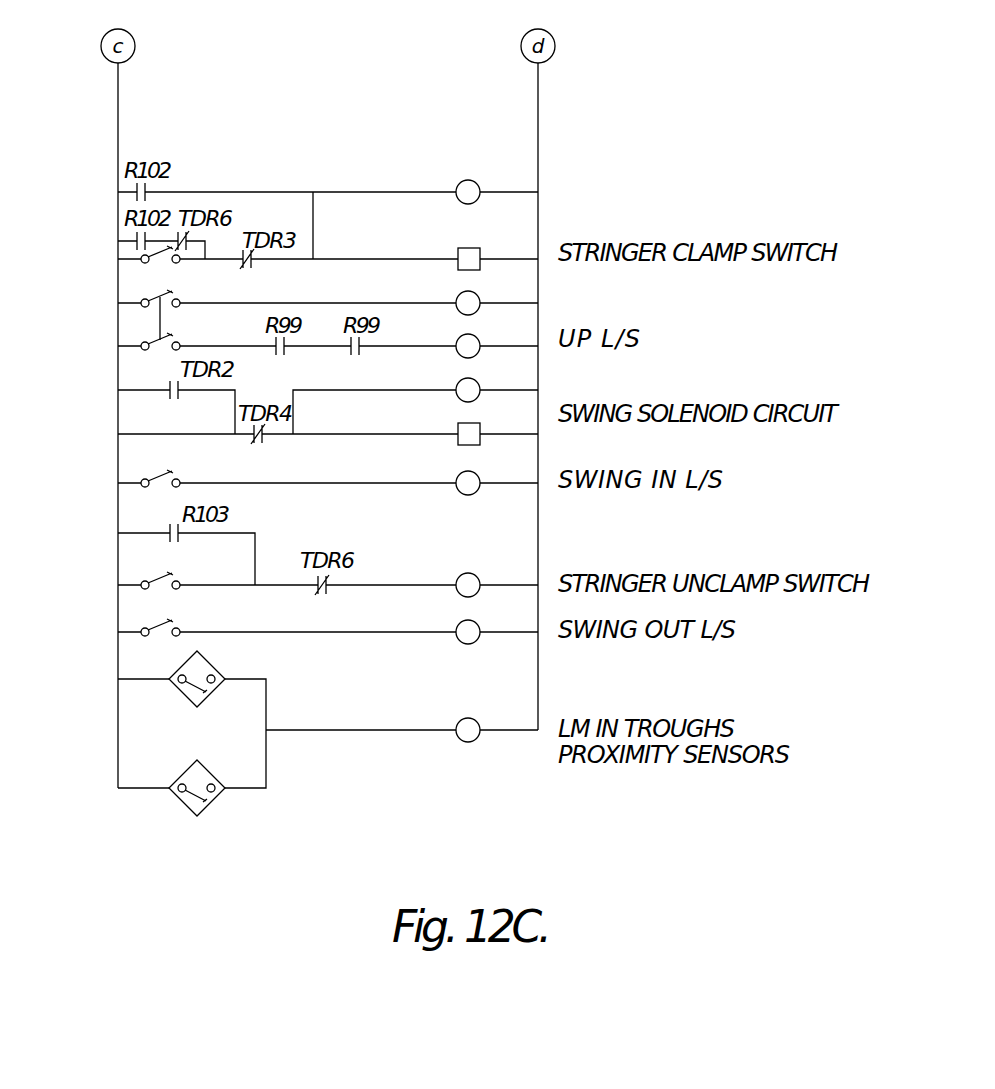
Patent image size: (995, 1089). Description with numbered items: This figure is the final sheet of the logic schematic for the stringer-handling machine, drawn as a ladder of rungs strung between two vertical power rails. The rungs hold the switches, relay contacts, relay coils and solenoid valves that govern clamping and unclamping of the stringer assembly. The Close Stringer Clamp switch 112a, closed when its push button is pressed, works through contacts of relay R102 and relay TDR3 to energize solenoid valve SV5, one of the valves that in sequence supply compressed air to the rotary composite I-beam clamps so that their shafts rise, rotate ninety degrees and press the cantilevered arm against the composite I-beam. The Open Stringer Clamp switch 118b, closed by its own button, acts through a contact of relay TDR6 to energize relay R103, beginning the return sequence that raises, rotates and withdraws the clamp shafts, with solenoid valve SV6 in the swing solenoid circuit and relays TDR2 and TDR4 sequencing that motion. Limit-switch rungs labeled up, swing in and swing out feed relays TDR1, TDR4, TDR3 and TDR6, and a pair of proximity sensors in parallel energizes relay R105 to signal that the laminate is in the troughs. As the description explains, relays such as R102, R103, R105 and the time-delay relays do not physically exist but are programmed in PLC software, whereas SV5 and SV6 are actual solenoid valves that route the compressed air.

The Close Stringer Clamp switch 112a is at (160, 262).
The Open Stringer Clamp switch 118b is at (160, 589).
The relay R102 coil R102 is at (495, 182).
The relay R103 coil R103 is at (442, 573).
The relay R105 coil R105 is at (442, 718).
The solenoid valve SV5 is at (492, 249).
The solenoid valve SV6 is at (492, 423).
The time delay relay TDR1 is at (442, 292).
The time delay relay TDR2 is at (442, 379).
The time delay relay TDR3 is at (442, 472).
The time delay relay TDR4 is at (442, 335).
The time delay relay TDR6 is at (442, 620).